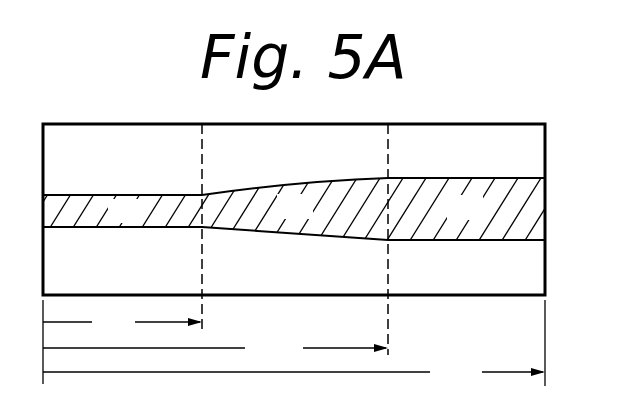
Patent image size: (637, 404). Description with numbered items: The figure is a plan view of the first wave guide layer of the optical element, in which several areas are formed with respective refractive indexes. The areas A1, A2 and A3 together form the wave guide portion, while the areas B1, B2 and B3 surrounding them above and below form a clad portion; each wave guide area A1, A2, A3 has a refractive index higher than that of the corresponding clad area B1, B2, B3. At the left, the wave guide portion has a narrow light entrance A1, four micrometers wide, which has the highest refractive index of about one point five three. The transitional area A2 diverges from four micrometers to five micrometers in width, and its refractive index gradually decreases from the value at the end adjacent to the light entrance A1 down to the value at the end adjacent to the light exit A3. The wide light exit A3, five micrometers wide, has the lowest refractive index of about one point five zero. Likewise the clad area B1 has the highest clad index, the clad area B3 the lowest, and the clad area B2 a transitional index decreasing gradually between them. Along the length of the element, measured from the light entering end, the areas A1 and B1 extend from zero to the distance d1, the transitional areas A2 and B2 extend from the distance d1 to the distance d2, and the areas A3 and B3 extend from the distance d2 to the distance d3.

The light entrance area A1 is at (307, 210).
The transitional area A2 is at (307, 210).
The light exit area A3 is at (307, 210).
The clad area B1 is at (122, 209).
The transitional clad area B2 is at (295, 239).
The clad area B3 is at (466, 209).
The distance d1 is at (122, 342).
The distance d2 is at (215, 349).
The distance d3 is at (294, 343).